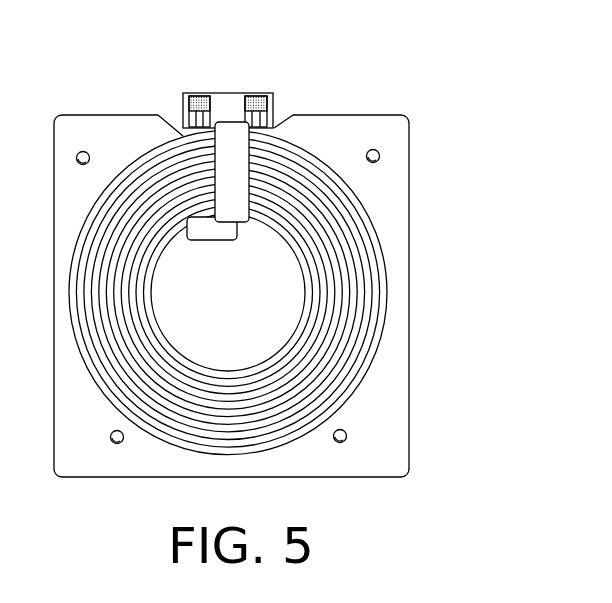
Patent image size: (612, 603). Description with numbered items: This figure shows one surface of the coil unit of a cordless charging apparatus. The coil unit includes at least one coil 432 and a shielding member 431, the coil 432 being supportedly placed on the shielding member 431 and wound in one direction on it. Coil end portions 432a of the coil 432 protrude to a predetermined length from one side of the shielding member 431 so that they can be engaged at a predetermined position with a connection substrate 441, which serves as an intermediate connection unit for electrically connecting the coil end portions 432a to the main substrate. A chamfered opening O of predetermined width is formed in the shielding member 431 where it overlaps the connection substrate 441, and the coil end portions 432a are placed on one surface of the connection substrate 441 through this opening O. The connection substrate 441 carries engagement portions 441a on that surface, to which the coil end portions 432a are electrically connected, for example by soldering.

The opening in base plate O is at (171, 120).
The shielding member 431 is at (397, 380).
The coil 432 is at (385, 273).
The coil end portions 432a is at (270, 118).
The connection substrate 441 is at (226, 93).
The engagement portions 441a is at (254, 96).